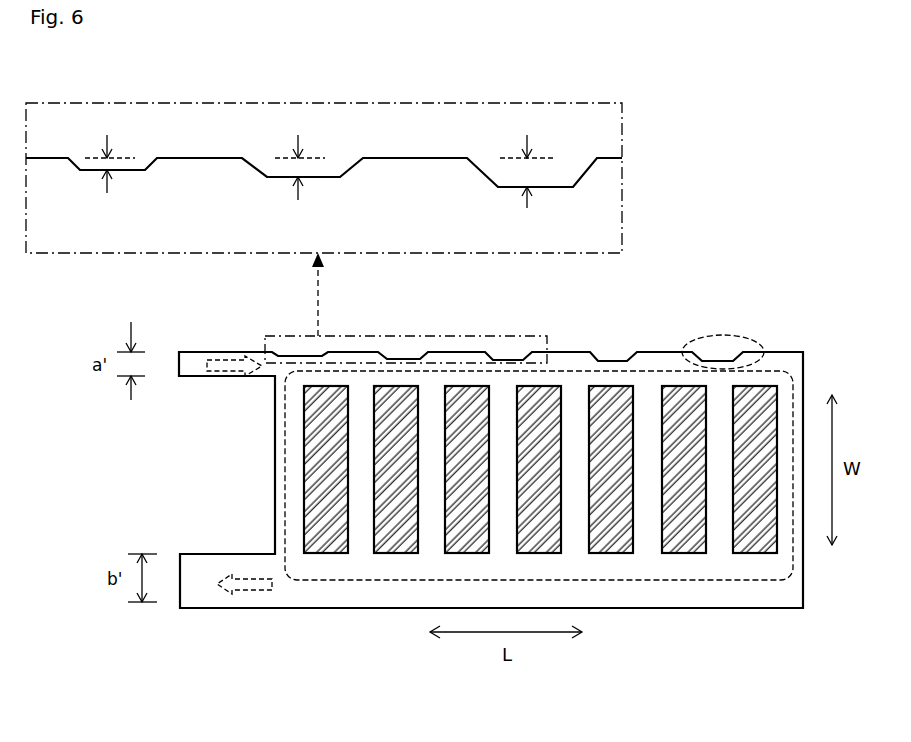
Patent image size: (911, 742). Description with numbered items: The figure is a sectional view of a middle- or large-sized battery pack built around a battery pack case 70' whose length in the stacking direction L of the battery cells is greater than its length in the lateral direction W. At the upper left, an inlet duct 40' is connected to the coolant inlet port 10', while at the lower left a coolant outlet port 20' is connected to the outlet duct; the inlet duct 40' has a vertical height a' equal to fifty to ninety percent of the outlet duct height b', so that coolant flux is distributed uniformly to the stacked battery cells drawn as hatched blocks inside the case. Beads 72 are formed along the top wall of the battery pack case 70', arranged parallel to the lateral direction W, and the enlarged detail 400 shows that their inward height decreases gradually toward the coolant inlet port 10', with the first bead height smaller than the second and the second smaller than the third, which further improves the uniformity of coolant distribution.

The enlarged surface profile of the plate top edge 400 is at (128, 76).
The coolant inlet port 10' is at (483, 440).
The inlet duct 40' is at (201, 407).
The coolant outlet port 20' is at (210, 631).
The battery pack case 70' is at (539, 540).
The beads 72 is at (747, 340).